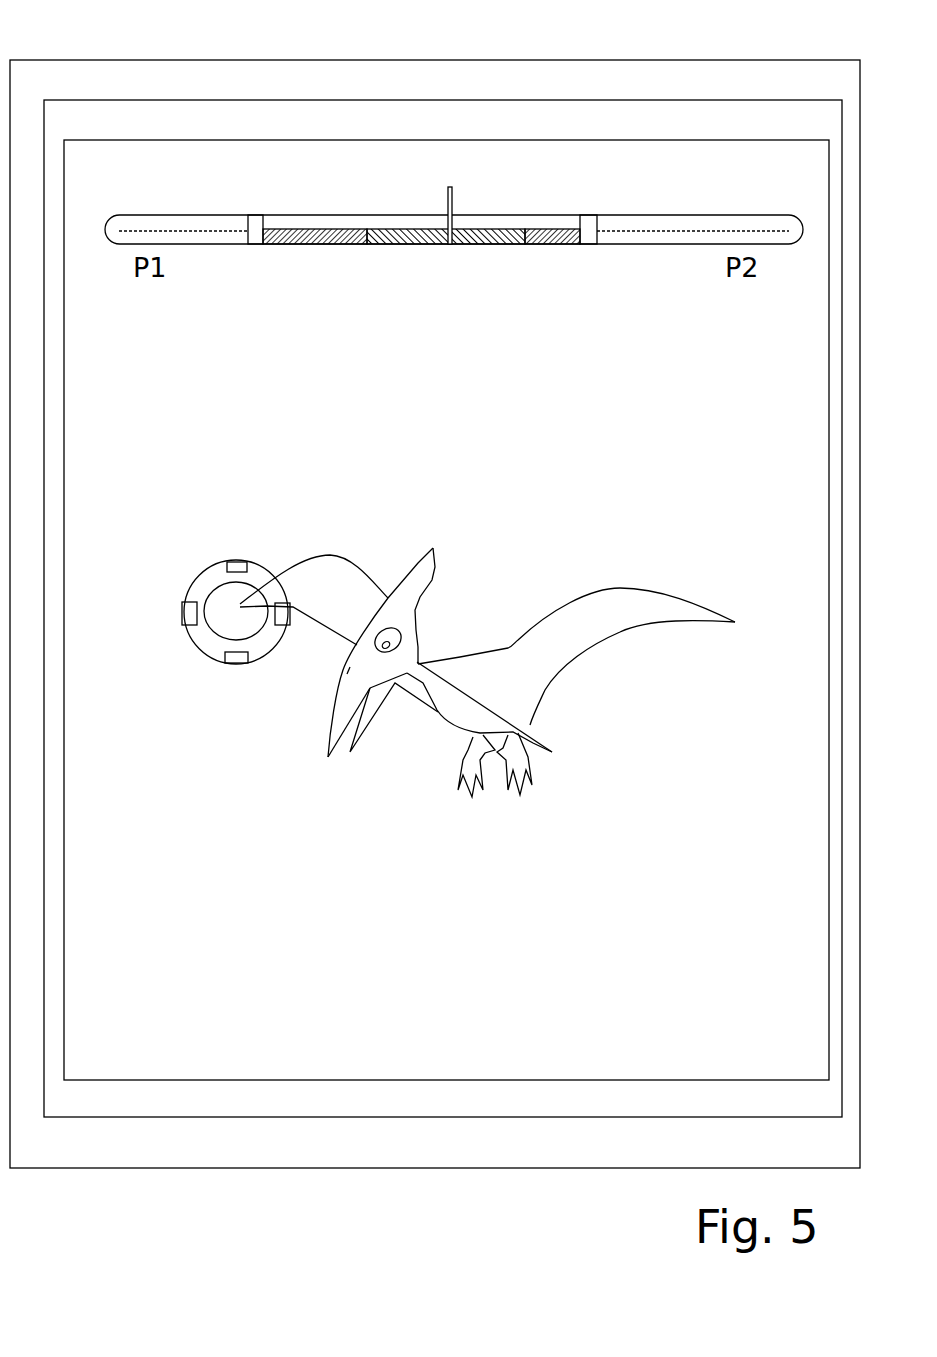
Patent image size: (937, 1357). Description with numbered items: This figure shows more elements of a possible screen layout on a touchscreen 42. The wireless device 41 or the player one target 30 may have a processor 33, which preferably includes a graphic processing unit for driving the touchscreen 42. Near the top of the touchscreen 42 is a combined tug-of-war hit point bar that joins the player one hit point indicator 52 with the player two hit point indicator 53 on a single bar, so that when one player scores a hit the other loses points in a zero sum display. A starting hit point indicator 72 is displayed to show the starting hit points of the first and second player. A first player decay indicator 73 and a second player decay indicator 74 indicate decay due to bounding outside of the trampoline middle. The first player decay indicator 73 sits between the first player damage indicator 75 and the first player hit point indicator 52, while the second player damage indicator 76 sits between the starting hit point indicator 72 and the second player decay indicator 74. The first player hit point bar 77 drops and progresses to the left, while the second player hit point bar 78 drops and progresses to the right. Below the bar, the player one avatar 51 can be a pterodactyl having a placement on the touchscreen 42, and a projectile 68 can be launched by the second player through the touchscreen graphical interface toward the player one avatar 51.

The wireless device 41 is at (435, 587).
The player one target 30 is at (40, 70).
The processor 33 is at (105, 122).
The touchscreen 42 is at (165, 167).
The first player hit point bar 77 is at (333, 215).
The second player hit point bar 78 is at (682, 215).
The starting hit point indicator 72 is at (455, 190).
The player one hit point indicator 52 is at (253, 245).
The player two hit point indicator 53 is at (590, 245).
The first player decay indicator 73 is at (330, 244).
The second player decay indicator 74 is at (538, 244).
The first player damage indicator 75 is at (423, 244).
The second player damage indicator 76 is at (468, 244).
The player one avatar 51 is at (347, 542).
The projectile 68 is at (202, 585).